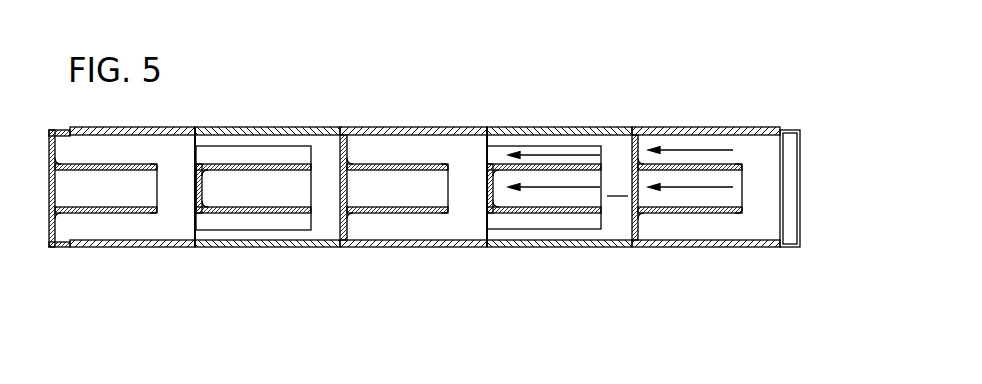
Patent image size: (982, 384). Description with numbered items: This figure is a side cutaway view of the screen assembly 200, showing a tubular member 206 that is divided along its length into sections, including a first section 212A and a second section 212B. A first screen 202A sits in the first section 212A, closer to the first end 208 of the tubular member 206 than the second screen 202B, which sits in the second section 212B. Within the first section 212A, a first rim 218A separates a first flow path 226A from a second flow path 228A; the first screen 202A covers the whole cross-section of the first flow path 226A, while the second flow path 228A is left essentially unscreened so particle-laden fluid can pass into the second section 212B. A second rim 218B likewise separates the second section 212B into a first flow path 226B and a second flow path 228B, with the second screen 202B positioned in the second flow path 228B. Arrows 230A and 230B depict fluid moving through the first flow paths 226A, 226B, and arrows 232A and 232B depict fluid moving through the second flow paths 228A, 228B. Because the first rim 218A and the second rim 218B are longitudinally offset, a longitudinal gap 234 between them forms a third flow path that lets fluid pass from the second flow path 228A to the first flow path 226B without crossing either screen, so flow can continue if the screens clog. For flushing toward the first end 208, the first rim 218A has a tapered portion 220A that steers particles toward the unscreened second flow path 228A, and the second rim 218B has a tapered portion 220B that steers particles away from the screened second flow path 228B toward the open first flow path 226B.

The screen assembly 200 is at (660, 62).
The first screen 202A is at (727, 191).
The second screen 202B is at (523, 195).
The tubular member 206 is at (794, 247).
The first end 208 is at (800, 236).
The first section 212A is at (764, 246).
The second section 212B is at (584, 232).
The first rim 218A is at (742, 172).
The second rim 218B is at (634, 78).
The tapered portion 220A is at (640, 216).
The tapered portion 220B is at (487, 212).
The first flow path 226A is at (683, 139).
The first flow path 226B is at (549, 134).
The second flow path 228A is at (696, 198).
The second flow path 228B is at (563, 198).
The arrow 230A is at (720, 150).
The arrow 230B is at (542, 154).
The arrow 232A is at (705, 188).
The arrow 232B is at (548, 188).
The longitudinal gap 234 is at (621, 188).